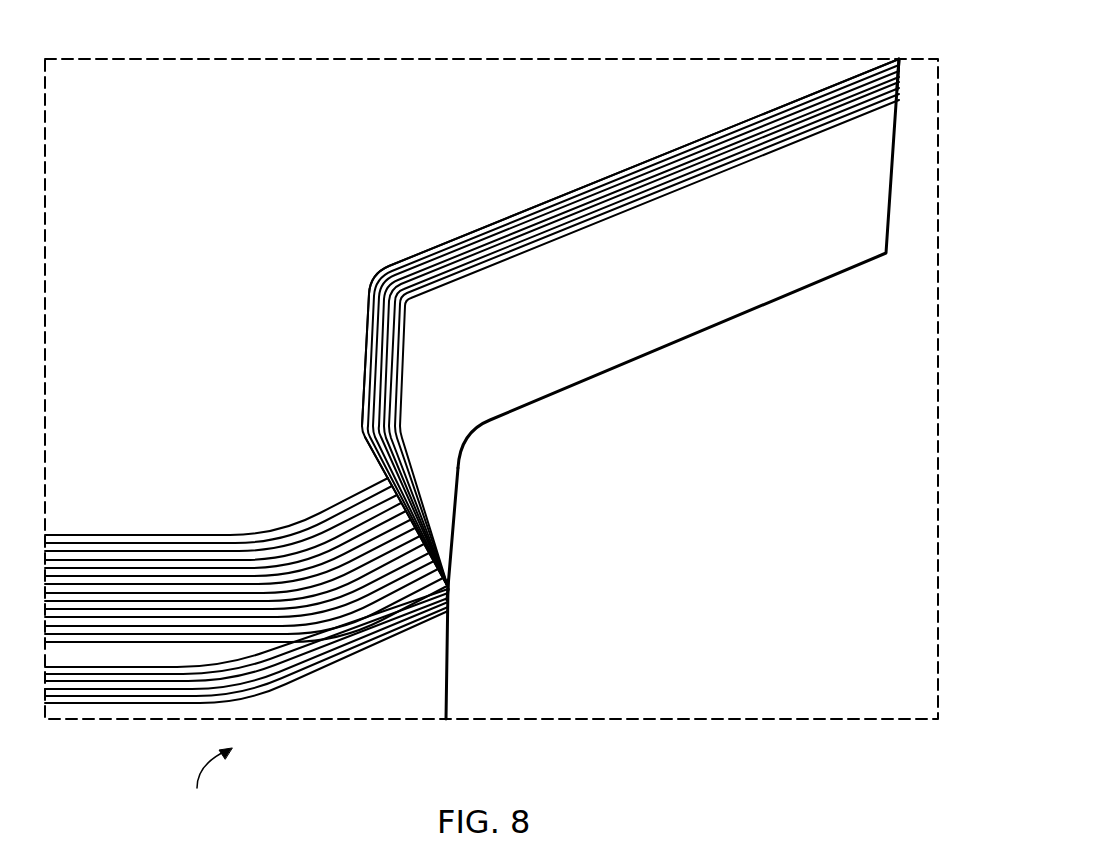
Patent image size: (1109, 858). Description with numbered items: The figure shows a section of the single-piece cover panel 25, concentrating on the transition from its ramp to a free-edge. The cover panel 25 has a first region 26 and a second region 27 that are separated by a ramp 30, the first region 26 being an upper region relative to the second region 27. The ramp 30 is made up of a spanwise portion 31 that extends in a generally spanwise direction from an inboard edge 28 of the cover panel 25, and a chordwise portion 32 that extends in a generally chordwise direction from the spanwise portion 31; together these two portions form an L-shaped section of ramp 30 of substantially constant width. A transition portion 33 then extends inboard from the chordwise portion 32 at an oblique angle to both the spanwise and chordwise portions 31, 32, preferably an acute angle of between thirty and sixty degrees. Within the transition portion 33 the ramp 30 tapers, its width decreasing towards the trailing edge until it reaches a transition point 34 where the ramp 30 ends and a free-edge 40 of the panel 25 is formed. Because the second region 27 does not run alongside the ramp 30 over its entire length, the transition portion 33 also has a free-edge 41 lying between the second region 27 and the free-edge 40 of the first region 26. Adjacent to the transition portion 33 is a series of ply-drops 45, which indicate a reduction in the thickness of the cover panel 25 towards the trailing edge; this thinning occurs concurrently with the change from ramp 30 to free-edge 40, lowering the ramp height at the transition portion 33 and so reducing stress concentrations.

The single-piece cover panel 25 is at (206, 785).
The first region 26 is at (265, 164).
The second region 27 is at (630, 296).
The inboard edge 28 is at (908, 72).
The ramp 30 is at (445, 240).
The spanwise portion 31 is at (530, 212).
The chordwise portion 32 is at (367, 360).
The transition portion 33 is at (405, 470).
The transition point 34 is at (452, 593).
The free-edge 40 is at (448, 692).
The free-edge 41 is at (452, 588).
The ply-drops 45 is at (263, 553).